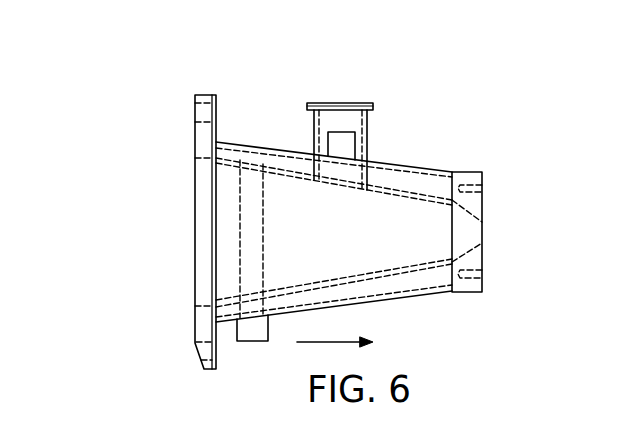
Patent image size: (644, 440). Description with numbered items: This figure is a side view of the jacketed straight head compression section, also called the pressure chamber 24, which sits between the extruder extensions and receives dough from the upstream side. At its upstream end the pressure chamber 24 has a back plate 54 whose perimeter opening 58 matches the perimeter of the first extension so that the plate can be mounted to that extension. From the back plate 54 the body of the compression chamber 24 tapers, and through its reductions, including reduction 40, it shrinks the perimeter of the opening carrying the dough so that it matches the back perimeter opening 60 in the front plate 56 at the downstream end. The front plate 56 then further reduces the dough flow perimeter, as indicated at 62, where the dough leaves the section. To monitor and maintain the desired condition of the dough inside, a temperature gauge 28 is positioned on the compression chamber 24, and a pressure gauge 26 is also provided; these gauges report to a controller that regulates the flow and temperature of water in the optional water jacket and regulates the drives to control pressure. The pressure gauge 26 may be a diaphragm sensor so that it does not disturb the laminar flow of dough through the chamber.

The pressure chamber 24 is at (531, 254).
The pressure gauge 26 is at (343, 103).
The temperature gauge 28 is at (328, 155).
The reduction 40 is at (412, 263).
The upstream back plate 54 is at (195, 183).
The front plate 56 is at (482, 203).
The perimeter opening 58 is at (196, 302).
The back perimeter opening 60 is at (452, 262).
The reduced dough flow perimeter 62 is at (482, 243).